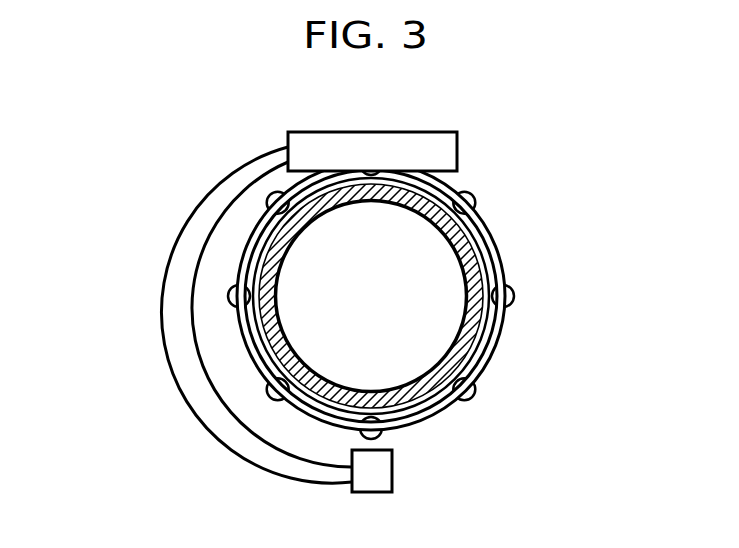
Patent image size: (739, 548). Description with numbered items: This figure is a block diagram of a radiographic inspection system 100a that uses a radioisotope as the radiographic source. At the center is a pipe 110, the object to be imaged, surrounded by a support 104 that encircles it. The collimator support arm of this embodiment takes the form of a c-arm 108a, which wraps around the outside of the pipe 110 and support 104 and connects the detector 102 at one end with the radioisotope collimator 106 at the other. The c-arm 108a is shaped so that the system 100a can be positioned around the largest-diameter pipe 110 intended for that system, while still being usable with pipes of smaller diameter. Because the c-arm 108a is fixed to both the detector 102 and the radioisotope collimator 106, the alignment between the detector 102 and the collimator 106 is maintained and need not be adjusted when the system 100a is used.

The radiographic inspection system 100a is at (188, 151).
The detector 102 is at (458, 156).
The support 104 is at (505, 267).
The radioisotope collimator 106 is at (392, 470).
The c-arm 108a is at (164, 314).
The pipe 110 is at (473, 337).